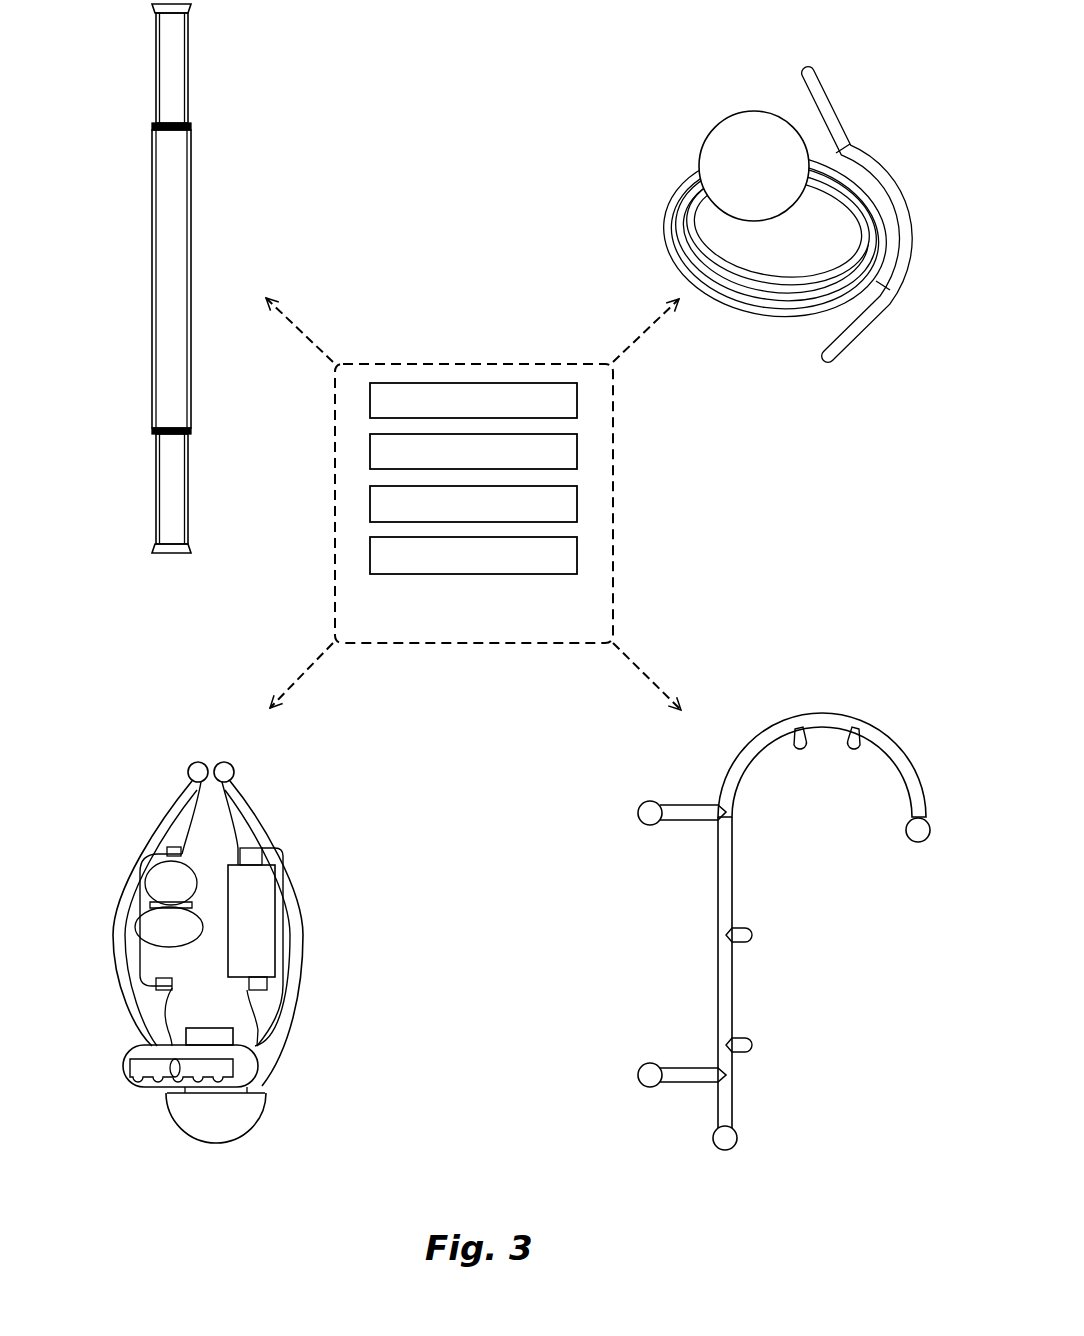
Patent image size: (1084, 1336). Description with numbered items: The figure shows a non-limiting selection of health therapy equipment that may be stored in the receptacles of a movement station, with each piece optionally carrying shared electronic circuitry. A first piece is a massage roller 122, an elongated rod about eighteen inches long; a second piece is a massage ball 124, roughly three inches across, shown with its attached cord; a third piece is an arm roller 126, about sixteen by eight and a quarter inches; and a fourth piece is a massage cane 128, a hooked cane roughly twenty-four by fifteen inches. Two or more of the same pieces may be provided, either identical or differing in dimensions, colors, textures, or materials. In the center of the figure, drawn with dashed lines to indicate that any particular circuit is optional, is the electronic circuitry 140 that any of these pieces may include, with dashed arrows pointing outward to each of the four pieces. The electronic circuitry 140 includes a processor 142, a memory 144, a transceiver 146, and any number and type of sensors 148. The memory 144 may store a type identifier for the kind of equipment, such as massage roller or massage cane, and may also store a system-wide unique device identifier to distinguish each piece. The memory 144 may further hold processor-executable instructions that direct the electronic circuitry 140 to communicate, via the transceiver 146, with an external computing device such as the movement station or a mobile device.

The massage roller 122 is at (216, 152).
The massage ball 124 is at (899, 158).
The arm roller 126 is at (92, 795).
The massage cane 128 is at (908, 722).
The electronic circuitry 140 is at (588, 627).
The processor 142 is at (562, 410).
The memory 144 is at (562, 461).
The transceiver 146 is at (562, 514).
The sensors 148 is at (562, 565).